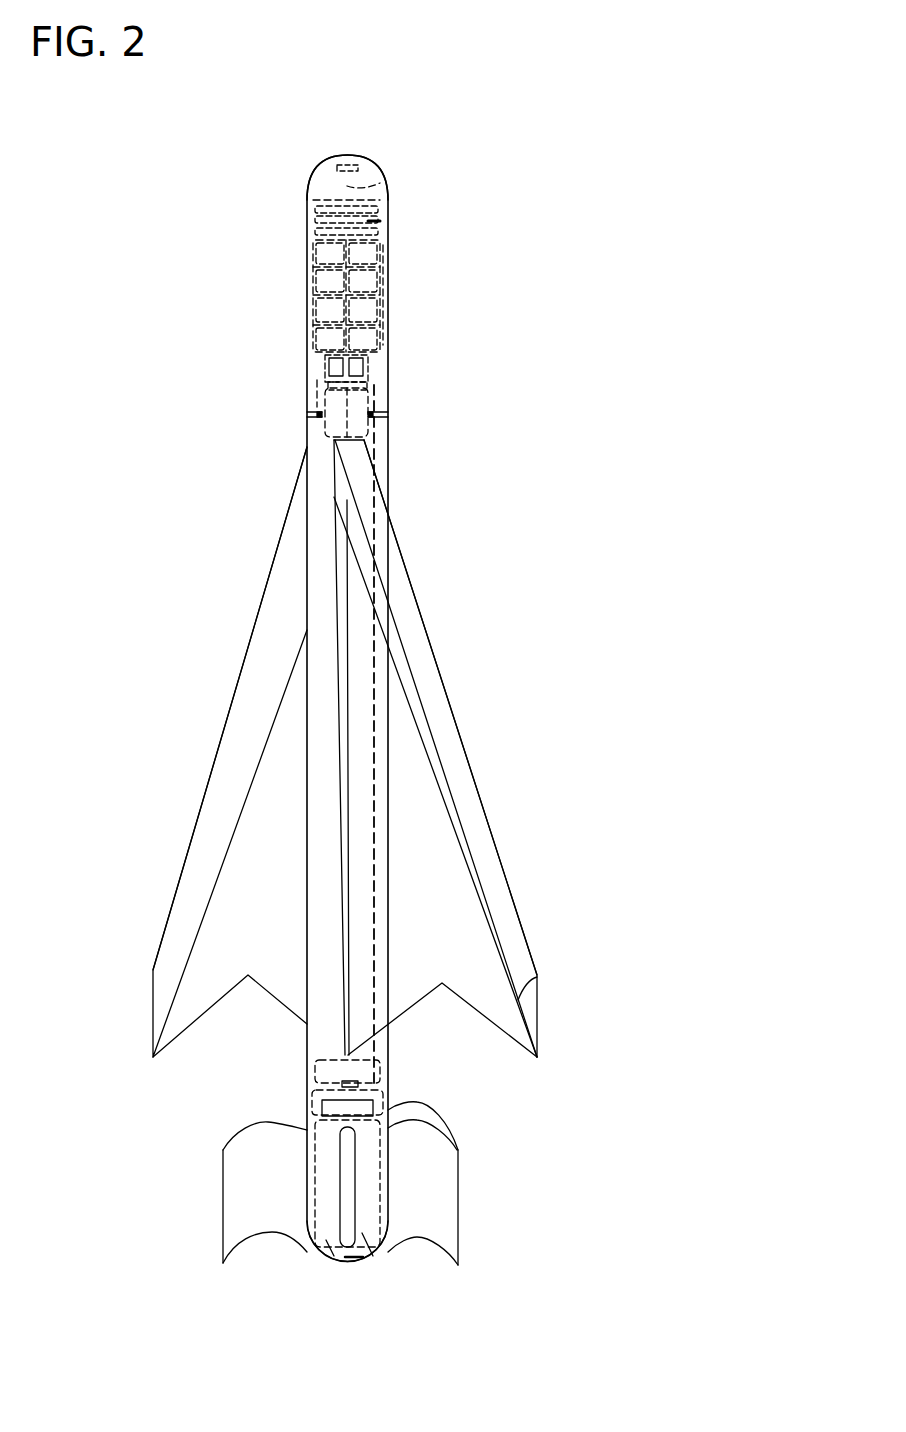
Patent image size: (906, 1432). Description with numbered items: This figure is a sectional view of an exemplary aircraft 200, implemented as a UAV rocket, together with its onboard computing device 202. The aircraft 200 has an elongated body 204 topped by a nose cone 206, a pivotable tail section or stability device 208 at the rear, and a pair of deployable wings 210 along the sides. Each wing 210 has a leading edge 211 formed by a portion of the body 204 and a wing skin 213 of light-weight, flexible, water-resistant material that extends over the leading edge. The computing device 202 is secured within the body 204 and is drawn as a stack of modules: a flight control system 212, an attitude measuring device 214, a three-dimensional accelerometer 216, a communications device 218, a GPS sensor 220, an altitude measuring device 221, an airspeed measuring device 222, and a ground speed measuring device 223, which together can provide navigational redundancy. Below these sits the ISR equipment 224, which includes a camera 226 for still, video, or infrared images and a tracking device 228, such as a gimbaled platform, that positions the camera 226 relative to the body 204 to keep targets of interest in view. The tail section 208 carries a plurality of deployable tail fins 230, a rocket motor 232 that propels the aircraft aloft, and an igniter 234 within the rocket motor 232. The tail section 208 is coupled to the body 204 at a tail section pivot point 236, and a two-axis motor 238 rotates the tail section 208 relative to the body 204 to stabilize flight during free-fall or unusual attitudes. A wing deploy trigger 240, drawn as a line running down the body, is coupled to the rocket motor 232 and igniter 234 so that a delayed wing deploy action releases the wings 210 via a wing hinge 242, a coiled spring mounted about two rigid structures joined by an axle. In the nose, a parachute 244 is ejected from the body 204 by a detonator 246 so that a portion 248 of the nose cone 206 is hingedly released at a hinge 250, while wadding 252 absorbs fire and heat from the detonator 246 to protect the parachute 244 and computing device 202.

The aircraft 200 is at (277, 154).
The computing device 202 is at (312, 356).
The body 204 is at (307, 840).
The nose cone 206 is at (383, 163).
The pivotable tail section 208 is at (345, 1263).
The deployable wings 210 is at (437, 636).
The leading edge 211 is at (218, 745).
The flight control system 212 is at (383, 245).
The wing skin 213 is at (417, 915).
The attitude measuring device 214 is at (383, 275).
The 3-dimensional accelerometer 216 is at (383, 302).
The communications device 218 is at (313, 241).
The GPS sensor 220 is at (313, 270).
The altitude measuring device 221 is at (313, 298).
The airspeed measuring device 222 is at (313, 327).
The ground speed measuring device 223 is at (383, 325).
The ISR equipment 224 is at (325, 368).
The camera 226 is at (317, 404).
The tracking device 228 is at (363, 373).
The deployable tail fins 230 is at (458, 1180).
The rocket motor 232 is at (372, 1255).
The igniter 234 is at (333, 1250).
The tail section pivot point 236 is at (308, 1110).
The 2-axis motor 238 is at (307, 1073).
The wing deploy trigger 240 is at (375, 538).
The wing hinge 242 is at (322, 428).
The parachute 244 is at (382, 182).
The detonator 246 is at (307, 214).
The portion of nose cone 248 is at (350, 163).
The hinge 250 is at (323, 168).
The wadding 252 is at (385, 218).